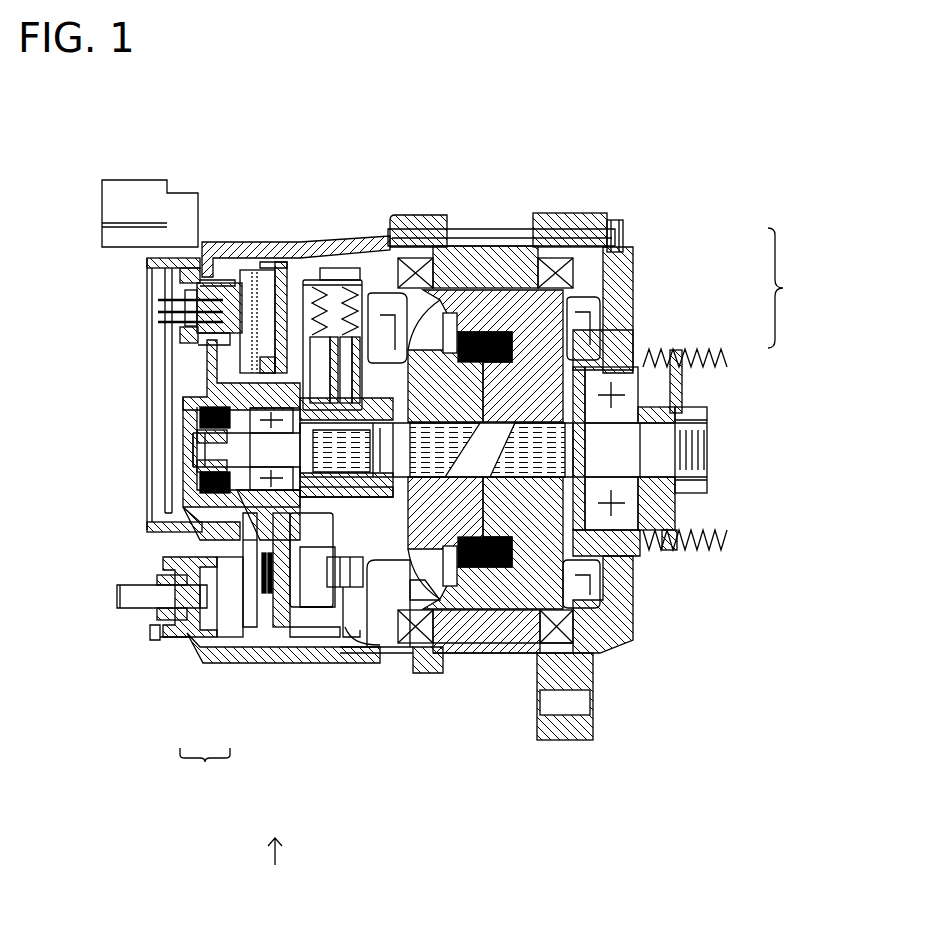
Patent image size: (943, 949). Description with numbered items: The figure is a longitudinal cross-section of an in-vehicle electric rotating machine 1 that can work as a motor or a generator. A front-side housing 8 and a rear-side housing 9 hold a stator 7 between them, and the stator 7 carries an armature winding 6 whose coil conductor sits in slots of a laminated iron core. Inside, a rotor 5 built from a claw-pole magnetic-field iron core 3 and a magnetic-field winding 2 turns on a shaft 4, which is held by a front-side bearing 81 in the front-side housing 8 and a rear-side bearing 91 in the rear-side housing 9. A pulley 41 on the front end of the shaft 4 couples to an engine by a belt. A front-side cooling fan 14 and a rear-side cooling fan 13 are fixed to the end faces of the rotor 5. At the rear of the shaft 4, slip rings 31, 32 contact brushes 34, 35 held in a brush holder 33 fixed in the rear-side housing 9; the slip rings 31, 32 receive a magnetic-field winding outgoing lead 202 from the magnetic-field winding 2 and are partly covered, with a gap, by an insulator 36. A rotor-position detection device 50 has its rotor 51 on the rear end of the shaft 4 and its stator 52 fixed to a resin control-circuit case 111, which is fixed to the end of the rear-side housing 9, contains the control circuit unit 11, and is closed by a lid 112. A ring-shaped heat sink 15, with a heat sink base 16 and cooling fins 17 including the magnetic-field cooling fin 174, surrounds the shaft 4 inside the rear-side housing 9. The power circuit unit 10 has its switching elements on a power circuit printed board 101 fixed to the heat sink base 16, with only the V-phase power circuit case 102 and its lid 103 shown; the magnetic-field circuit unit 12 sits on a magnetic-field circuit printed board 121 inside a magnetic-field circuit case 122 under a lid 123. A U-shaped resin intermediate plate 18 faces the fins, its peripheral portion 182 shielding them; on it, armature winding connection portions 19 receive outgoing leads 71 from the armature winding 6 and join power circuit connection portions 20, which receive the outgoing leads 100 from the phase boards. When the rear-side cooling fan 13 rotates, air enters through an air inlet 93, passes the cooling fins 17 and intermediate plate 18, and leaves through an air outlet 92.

The in-vehicle electric rotating machine 1 is at (300, 214).
The magnetic-field winding 2 is at (560, 307).
The magnetic-field iron core 3 is at (555, 342).
The shaft 4 is at (660, 445).
The rotor 5 is at (504, 415).
The armature winding 6 is at (455, 246).
The stator 7 is at (490, 250).
The front-side housing 8 is at (600, 215).
The rear-side housing 9 is at (395, 215).
The power circuit unit 10 is at (165, 690).
The control circuit unit 11 is at (120, 352).
The magnetic-field circuit unit 12 is at (245, 290).
The rear-side cooling fan 13 is at (383, 590).
The front-side cooling fan 14 is at (590, 582).
The heat sink 15 is at (221, 672).
The heat sink base 16 is at (250, 640).
The cooling fins 17 is at (275, 640).
The intermediate plate 18 is at (345, 645).
The armature winding connection portions 19 is at (200, 522).
The power circuit connection portions 20 is at (292, 648).
The slip ring 31 is at (333, 505).
The slip ring 32 is at (380, 505).
The brush holder 33 is at (328, 278).
The brush 34 is at (250, 382).
The brush 35 is at (240, 396).
The insulator 36 is at (310, 513).
The pulley 41 is at (725, 550).
The rotor-position detection device 50 is at (200, 432).
The rotor 51 is at (195, 458).
The stator 52 is at (205, 478).
The outgoing leads 71 is at (372, 640).
The front-side bearing 81 is at (625, 510).
The rear-side bearing 91 is at (195, 425).
The air outlet 92 is at (378, 650).
The air inlet 93 is at (280, 650).
The outgoing leads 100 is at (280, 655).
The power circuit printed board 101 is at (200, 650).
The V-phase power circuit case 102 is at (195, 530).
The lid 103 is at (165, 595).
The control-circuit case 111 is at (172, 260).
The lid 112 is at (148, 278).
The magnetic-field circuit printed board 121 is at (305, 268).
The magnetic-field circuit case 122 is at (262, 280).
The lid 123 is at (205, 350).
The magnetic-field cooling fin 174 is at (165, 330).
The peripheral portion 182 is at (300, 645).
The magnetic-field winding outgoing lead 202 is at (430, 620).